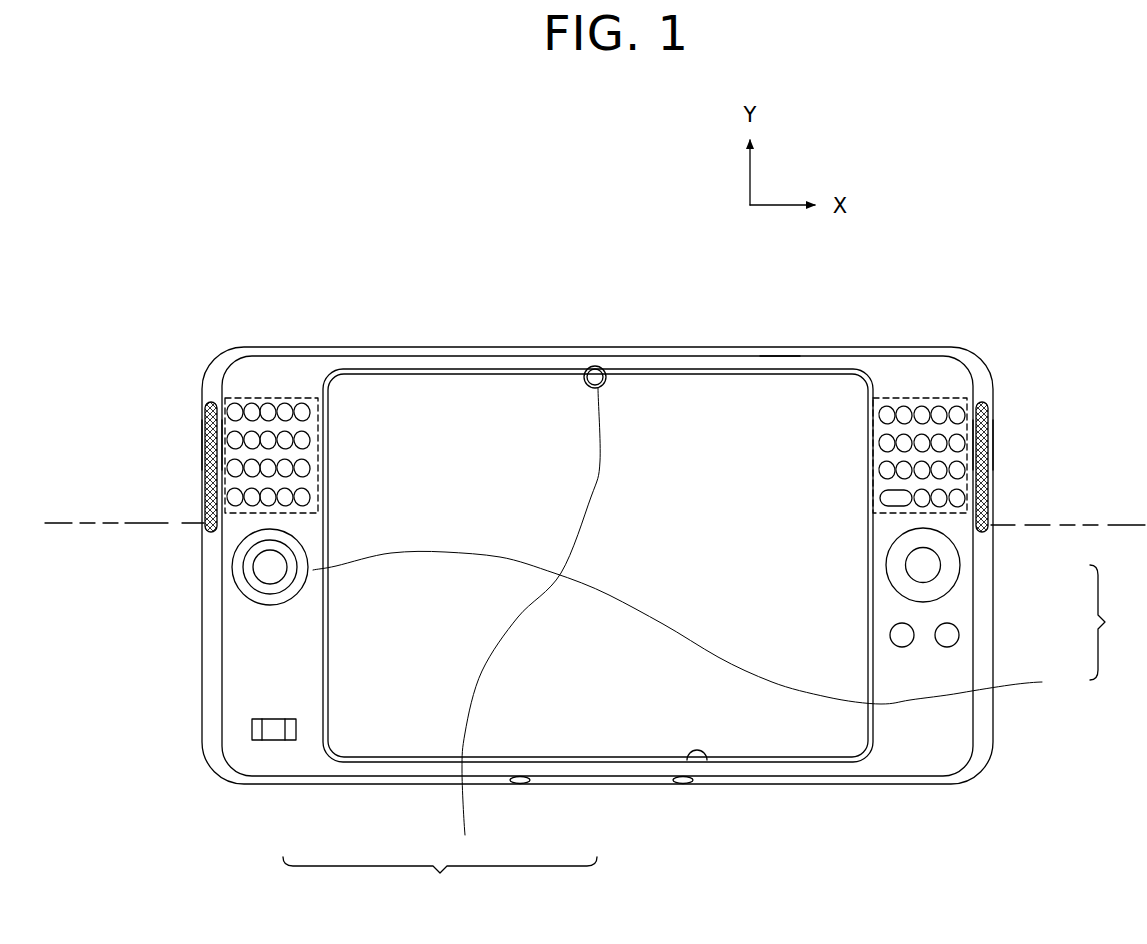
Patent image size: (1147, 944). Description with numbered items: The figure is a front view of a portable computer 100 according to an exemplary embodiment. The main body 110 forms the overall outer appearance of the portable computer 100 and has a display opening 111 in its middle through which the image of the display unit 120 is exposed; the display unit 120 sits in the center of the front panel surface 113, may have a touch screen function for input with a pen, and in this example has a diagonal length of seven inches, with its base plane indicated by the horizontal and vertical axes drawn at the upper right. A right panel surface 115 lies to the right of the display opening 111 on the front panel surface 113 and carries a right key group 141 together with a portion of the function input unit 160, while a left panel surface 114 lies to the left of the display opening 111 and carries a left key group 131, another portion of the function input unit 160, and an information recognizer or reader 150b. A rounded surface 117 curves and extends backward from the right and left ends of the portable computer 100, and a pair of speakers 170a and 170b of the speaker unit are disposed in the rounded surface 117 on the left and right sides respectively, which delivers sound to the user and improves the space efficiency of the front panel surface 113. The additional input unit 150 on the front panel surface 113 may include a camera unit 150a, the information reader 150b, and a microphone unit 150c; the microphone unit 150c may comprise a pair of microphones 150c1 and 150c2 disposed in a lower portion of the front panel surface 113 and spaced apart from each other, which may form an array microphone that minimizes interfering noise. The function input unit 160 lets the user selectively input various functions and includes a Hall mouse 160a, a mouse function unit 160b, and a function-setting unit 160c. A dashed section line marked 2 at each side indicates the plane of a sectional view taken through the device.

The portable computer 100 is at (345, 176).
The main body 110 is at (300, 278).
The display opening 111 is at (706, 762).
The front panel surface 113 is at (772, 360).
The left panel surface 114 is at (300, 385).
The right panel surface 115 is at (880, 380).
The rounded surface 117 is at (202, 392).
The display unit 120 is at (758, 733).
The left key group 131 is at (261, 390).
The right key group 141 is at (928, 388).
The additional input unit 150 is at (440, 879).
The camera unit 150a is at (526, 614).
The information reader 150b is at (275, 742).
The microphone unit 150c is at (608, 830).
The microphone 150c1 is at (522, 785).
The microphone 150c2 is at (683, 784).
The function input unit 160 is at (1117, 622).
The Hall mouse 160a is at (661, 616).
The mouse function unit 160b is at (905, 622).
The function-setting unit 160c is at (960, 563).
The speaker 170a is at (204, 468).
The speaker 170b is at (992, 461).
The section line 2- 2 is at (150, 528).